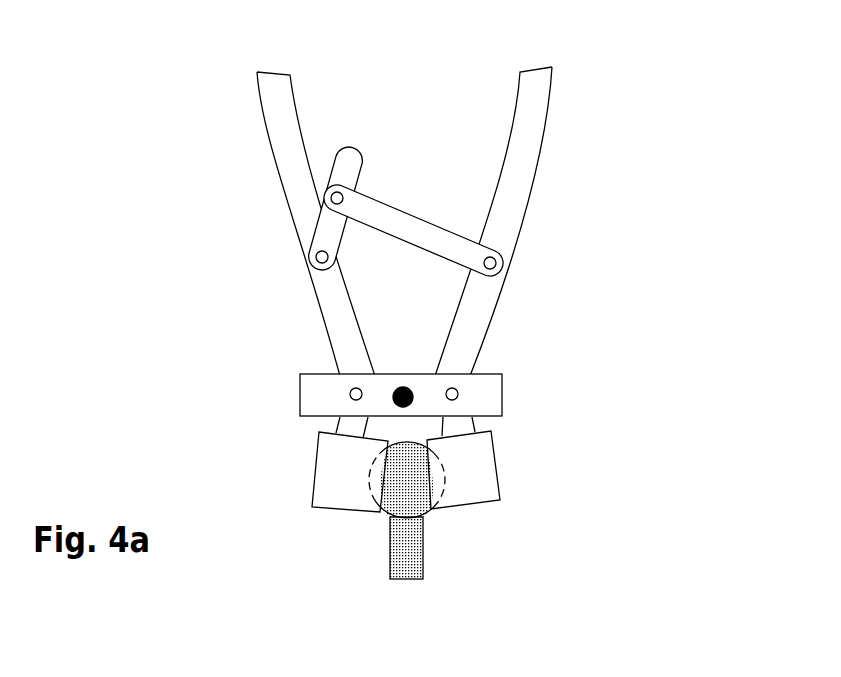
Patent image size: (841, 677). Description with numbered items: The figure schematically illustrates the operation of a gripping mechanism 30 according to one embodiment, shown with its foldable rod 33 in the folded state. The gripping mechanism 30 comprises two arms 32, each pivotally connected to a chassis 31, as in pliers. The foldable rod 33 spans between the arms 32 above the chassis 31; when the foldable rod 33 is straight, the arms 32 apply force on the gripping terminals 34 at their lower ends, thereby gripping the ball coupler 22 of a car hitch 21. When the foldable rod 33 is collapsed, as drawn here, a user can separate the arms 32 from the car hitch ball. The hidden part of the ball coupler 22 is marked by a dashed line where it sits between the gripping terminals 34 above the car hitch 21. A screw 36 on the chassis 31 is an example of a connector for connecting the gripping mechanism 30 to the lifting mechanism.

The gripping mechanism 30 is at (642, 228).
The chassis 31 is at (483, 398).
The arm 32 is at (270, 125).
The foldable rod 33 is at (400, 223).
The gripping pad 34 is at (333, 463).
The screw 36 is at (403, 387).
The car hitch 21 is at (410, 545).
The ball coupler 22 is at (387, 513).